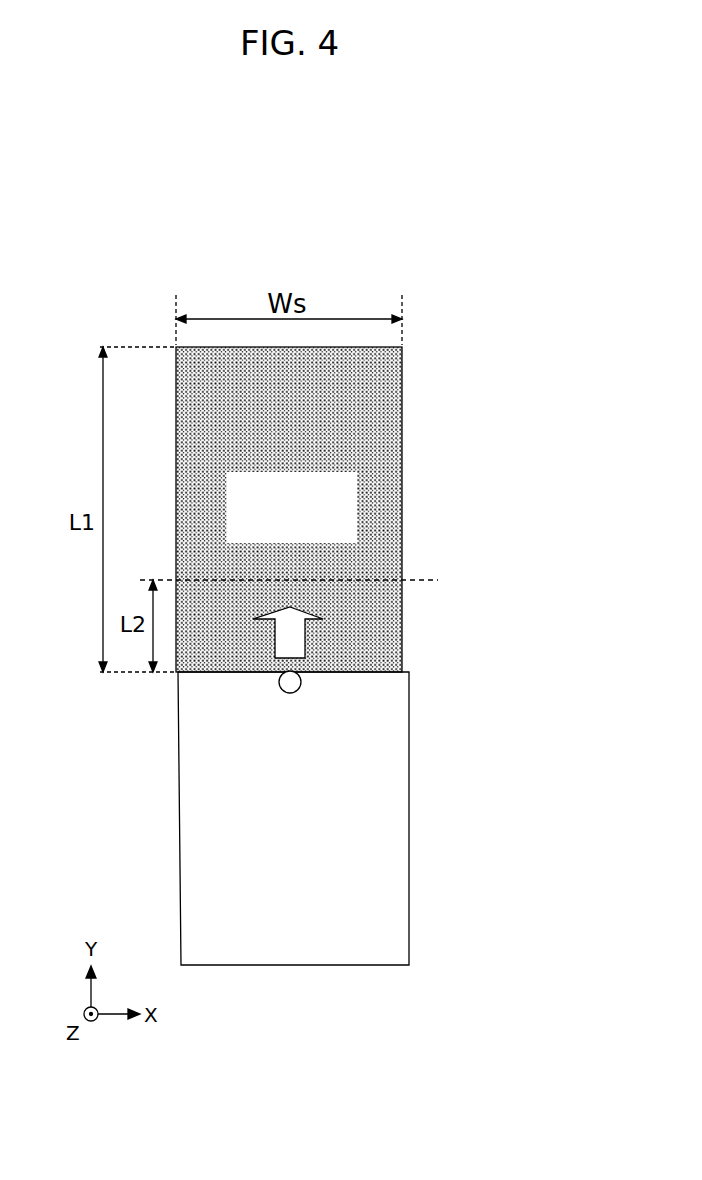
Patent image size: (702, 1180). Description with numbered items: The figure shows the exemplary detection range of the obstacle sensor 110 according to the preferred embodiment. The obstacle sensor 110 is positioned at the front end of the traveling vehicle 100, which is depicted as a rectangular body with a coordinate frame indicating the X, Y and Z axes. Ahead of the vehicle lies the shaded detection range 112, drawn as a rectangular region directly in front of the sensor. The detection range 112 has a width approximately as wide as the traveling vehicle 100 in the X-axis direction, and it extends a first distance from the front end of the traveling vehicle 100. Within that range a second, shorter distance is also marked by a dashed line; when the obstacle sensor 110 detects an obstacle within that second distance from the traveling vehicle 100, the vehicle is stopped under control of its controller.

The traveling vehicle 100 is at (409, 760).
The obstacle sensor 110 is at (288, 693).
The detection range 112 is at (388, 531).